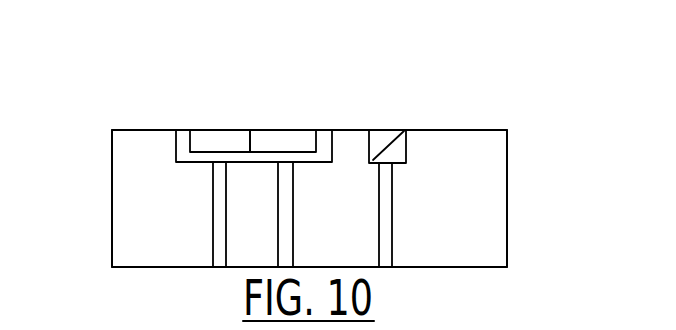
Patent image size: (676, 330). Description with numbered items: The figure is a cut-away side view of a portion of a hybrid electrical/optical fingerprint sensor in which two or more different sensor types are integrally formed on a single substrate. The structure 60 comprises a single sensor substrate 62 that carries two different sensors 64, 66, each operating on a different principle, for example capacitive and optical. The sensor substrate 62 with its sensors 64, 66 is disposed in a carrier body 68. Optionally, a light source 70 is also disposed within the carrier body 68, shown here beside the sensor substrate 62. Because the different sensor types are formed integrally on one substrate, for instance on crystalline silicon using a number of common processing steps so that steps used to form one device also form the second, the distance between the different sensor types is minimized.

The structure 60 is at (104, 90).
The sensor substrate 62 is at (174, 148).
The sensor 64 is at (212, 131).
The sensor 66 is at (282, 131).
The carrier body 68 is at (491, 197).
The light source 70 is at (405, 142).